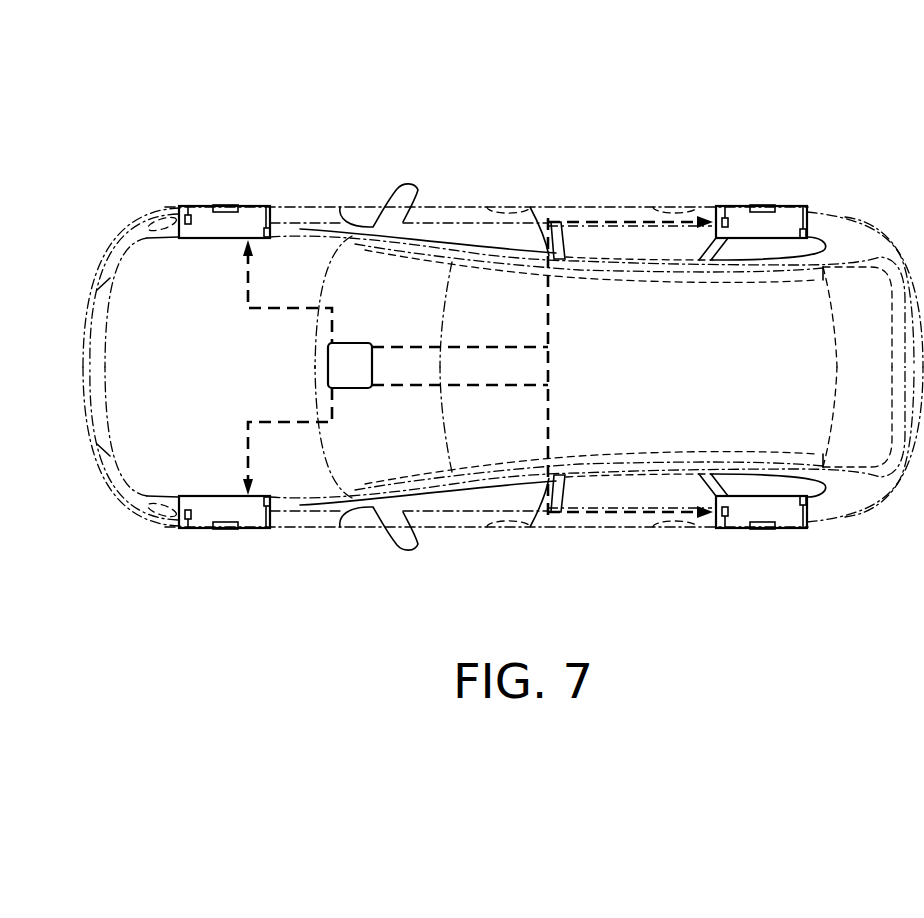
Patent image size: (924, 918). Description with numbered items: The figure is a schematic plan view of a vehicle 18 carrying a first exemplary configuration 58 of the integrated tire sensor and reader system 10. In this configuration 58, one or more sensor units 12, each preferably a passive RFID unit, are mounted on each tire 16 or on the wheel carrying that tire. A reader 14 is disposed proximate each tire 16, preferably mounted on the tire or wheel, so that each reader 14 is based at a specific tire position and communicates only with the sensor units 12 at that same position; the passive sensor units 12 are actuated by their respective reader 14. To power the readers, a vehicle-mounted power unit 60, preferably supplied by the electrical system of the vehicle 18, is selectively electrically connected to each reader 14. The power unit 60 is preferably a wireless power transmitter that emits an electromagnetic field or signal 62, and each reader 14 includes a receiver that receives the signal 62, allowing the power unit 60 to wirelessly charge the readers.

The integrated tire sensor and reader system 10 is at (585, 108).
The sensor unit 12 is at (188, 214).
The reader 14 is at (221, 205).
The tire 16 is at (260, 192).
The vehicle 18 is at (572, 196).
The first exemplary configuration 58 is at (490, 173).
The power unit 60 is at (350, 343).
The electromagnetic field or signal 62 is at (290, 308).